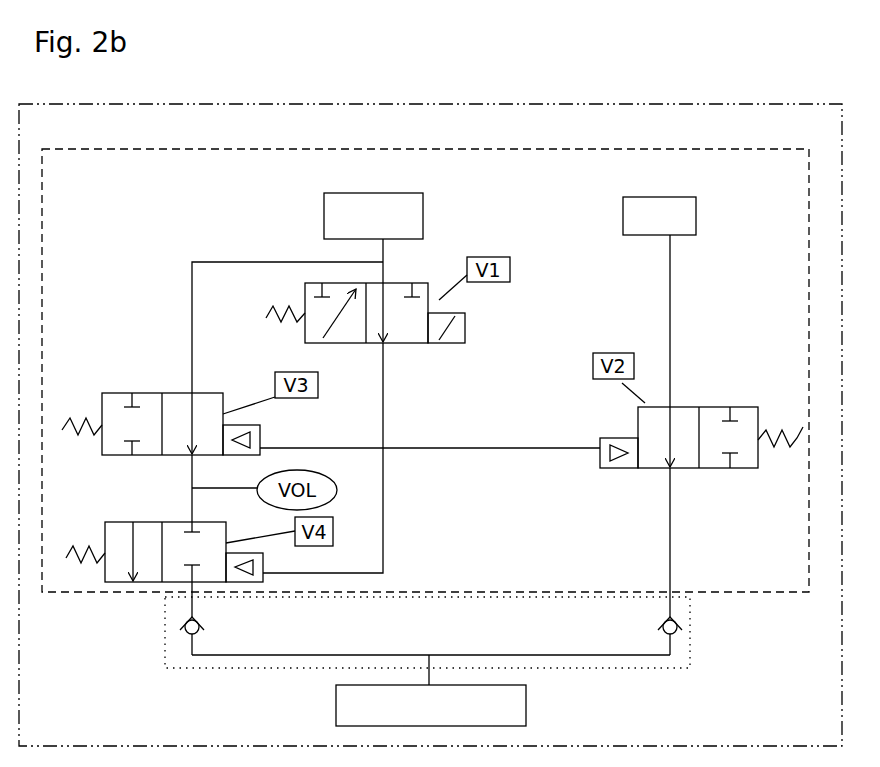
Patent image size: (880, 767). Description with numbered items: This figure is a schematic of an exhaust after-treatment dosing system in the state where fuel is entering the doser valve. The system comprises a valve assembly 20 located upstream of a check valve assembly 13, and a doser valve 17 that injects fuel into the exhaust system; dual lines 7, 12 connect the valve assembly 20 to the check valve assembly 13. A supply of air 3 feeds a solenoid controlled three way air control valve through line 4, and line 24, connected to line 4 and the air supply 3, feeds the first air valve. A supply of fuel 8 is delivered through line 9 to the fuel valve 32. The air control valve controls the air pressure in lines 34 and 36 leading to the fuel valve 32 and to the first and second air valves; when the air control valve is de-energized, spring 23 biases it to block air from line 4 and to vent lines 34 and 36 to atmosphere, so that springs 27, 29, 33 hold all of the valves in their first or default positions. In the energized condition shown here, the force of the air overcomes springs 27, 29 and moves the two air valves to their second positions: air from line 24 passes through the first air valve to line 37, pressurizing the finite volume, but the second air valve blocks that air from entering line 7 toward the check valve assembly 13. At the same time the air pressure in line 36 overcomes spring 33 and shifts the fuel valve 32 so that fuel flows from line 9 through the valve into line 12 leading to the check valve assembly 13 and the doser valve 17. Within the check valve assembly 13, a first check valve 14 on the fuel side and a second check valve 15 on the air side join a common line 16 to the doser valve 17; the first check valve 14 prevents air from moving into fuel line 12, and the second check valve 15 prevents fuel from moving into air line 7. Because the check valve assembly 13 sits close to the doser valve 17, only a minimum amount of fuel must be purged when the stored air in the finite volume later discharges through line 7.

The supply of air 3 is at (423, 221).
The line 4 is at (383, 250).
The line 7 is at (188, 590).
The supply of fuel 8 is at (696, 212).
The line 9 is at (670, 273).
The line 12 is at (670, 560).
The check valve assembly 13 is at (692, 620).
The first check valve 14 is at (200, 632).
The second check valve 15 is at (662, 634).
The line 16 is at (400, 653).
The doser valve 17 is at (520, 707).
The valve assembly 20 is at (762, 149).
The spring 23 is at (285, 308).
The line 24 is at (192, 302).
The spring 27 is at (72, 416).
The spring 29 is at (70, 548).
The fuel valve 32 is at (714, 405).
The spring 33 is at (777, 428).
The line 34 is at (383, 487).
The line 36 is at (502, 447).
The line 37 is at (185, 498).